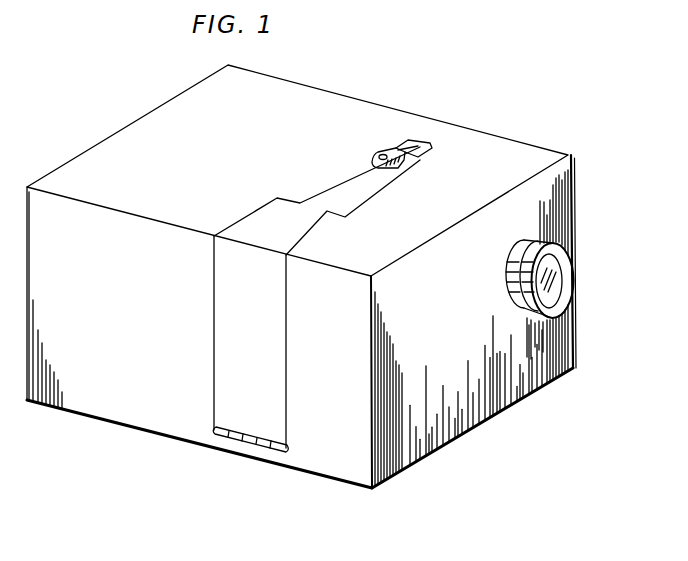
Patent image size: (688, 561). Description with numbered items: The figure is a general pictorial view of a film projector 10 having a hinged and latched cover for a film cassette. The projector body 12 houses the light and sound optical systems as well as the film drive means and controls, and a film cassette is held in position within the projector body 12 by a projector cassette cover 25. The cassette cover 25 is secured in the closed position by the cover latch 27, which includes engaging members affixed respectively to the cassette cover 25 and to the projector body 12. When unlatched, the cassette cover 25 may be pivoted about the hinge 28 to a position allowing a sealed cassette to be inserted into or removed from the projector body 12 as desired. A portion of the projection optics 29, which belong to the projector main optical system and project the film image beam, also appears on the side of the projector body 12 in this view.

The projector 10 is at (478, 85).
The projector body 12 is at (93, 147).
The projector cassette cover 25 is at (258, 228).
The cover latch 27 is at (373, 152).
The hinge 28 is at (245, 442).
The projection optics 29 is at (531, 246).